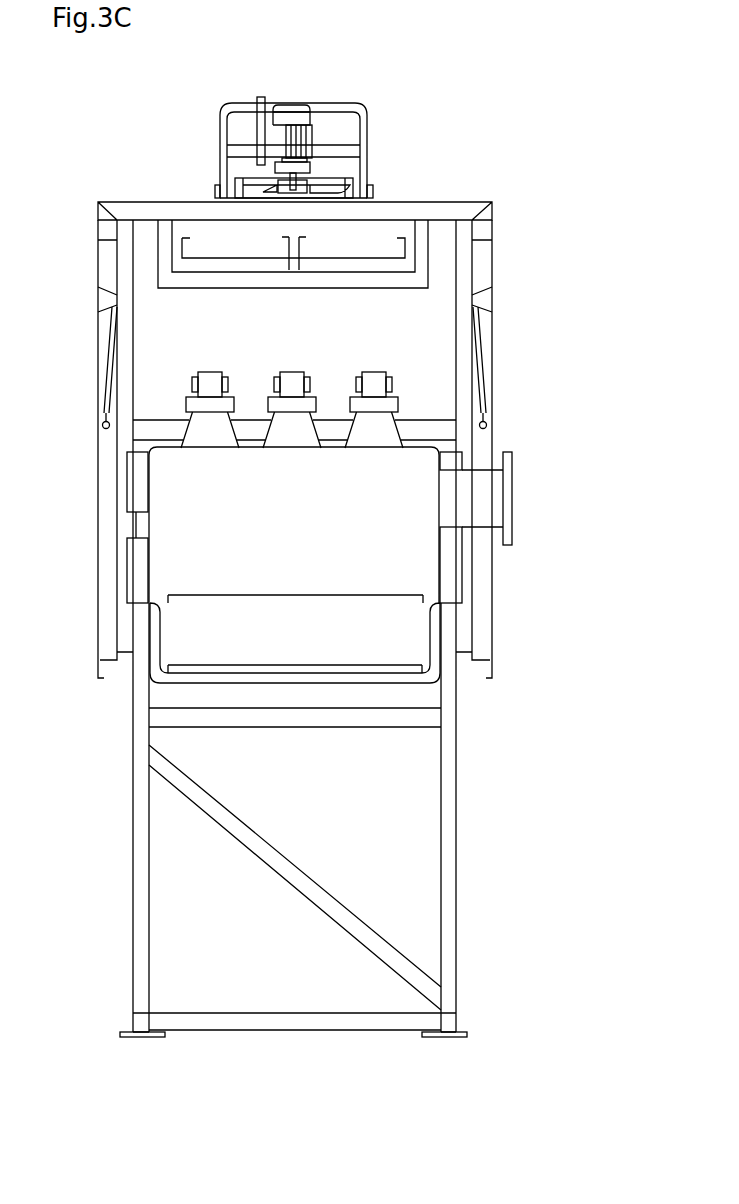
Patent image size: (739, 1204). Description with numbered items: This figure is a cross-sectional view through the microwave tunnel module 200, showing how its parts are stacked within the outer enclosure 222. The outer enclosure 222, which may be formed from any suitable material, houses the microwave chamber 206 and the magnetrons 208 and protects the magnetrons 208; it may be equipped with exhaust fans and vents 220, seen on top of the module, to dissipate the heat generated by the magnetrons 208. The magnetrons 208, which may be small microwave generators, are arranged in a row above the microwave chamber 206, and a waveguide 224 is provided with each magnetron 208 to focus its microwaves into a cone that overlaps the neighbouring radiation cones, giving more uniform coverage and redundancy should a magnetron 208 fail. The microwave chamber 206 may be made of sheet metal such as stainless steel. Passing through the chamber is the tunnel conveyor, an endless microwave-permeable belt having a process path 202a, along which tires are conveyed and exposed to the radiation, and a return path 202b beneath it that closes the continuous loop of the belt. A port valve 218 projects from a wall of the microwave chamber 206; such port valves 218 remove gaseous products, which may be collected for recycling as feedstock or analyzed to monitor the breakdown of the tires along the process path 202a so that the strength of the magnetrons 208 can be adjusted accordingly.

The microwave tunnel module 200 is at (510, 200).
The outer enclosure 222 is at (98, 208).
The exhaust fans and vents 220 is at (303, 138).
The magnetrons 208 is at (212, 395).
The waveguide 224 is at (280, 442).
The process path 202a is at (300, 598).
The return path 202b is at (230, 670).
The microwave chamber 206 is at (136, 518).
The port valves 218 is at (483, 512).